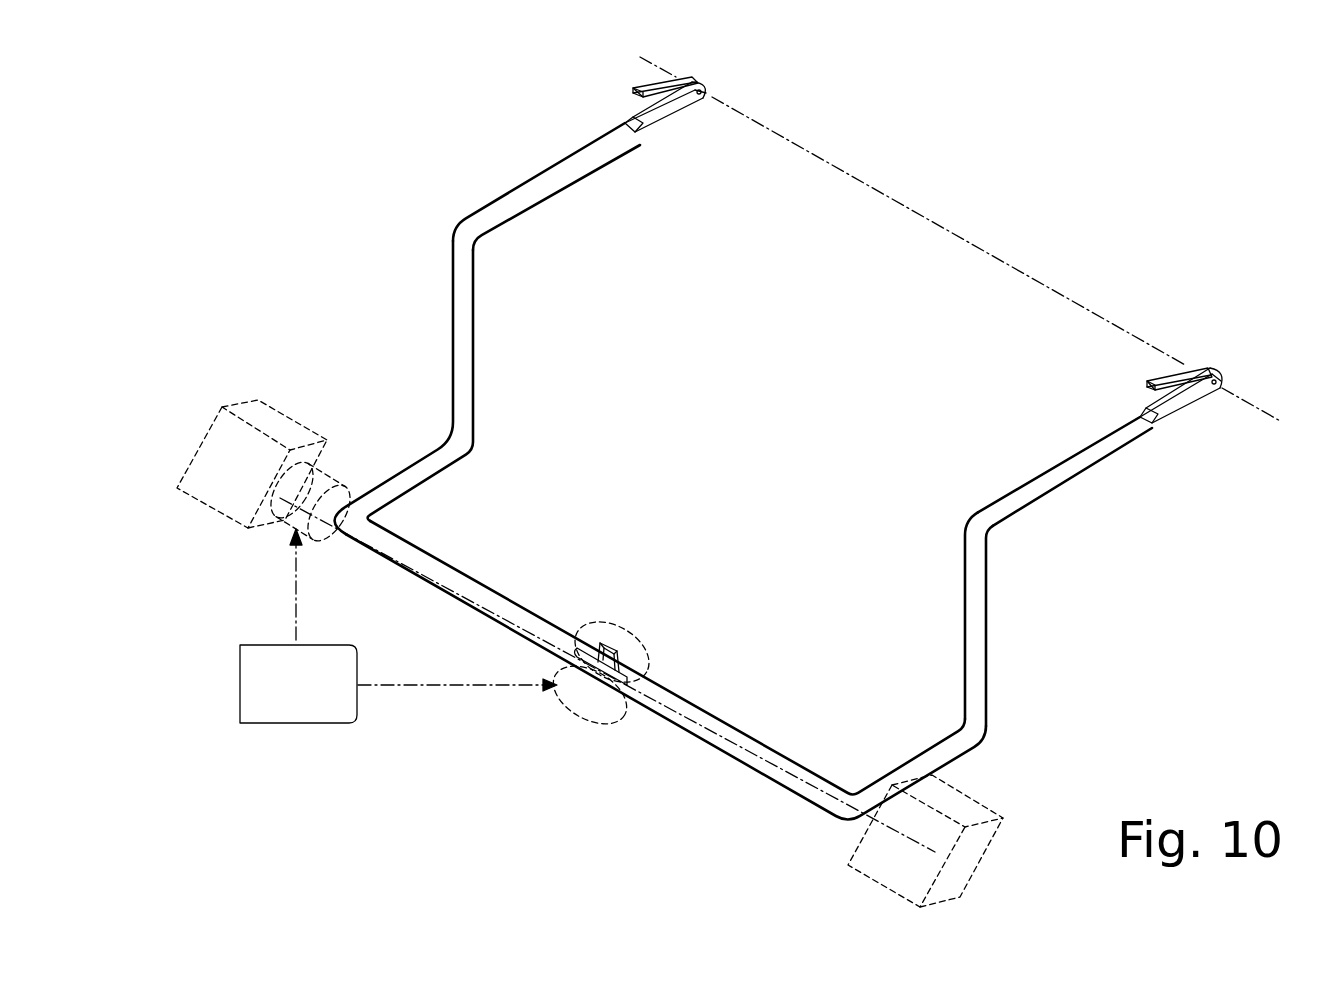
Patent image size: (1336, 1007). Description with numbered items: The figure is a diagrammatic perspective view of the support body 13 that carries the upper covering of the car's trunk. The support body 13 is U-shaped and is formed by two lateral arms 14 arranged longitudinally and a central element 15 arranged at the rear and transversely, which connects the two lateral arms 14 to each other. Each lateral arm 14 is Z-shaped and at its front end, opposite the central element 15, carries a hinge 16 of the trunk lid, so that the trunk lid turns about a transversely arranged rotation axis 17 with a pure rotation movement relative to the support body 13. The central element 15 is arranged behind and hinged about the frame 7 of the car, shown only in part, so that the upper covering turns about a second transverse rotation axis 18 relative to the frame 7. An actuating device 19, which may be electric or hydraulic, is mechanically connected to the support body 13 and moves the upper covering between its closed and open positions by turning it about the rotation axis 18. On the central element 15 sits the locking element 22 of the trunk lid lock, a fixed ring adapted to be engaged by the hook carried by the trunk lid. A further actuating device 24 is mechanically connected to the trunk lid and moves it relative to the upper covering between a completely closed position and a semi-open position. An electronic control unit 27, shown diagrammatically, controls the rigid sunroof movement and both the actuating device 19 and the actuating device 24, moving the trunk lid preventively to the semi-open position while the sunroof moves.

The frame 7 is at (224, 468).
The support body 13 is at (1015, 180).
The lateral arm 14 is at (549, 198).
The central element 15 is at (523, 603).
The hinge 16 is at (667, 100).
The rotation axis 17 is at (927, 222).
The rotation axis 18 is at (671, 722).
The actuating device 19 is at (324, 538).
The locking element 22 is at (623, 648).
The actuating device 24 is at (582, 706).
The electronic control unit 27 is at (398, 626).